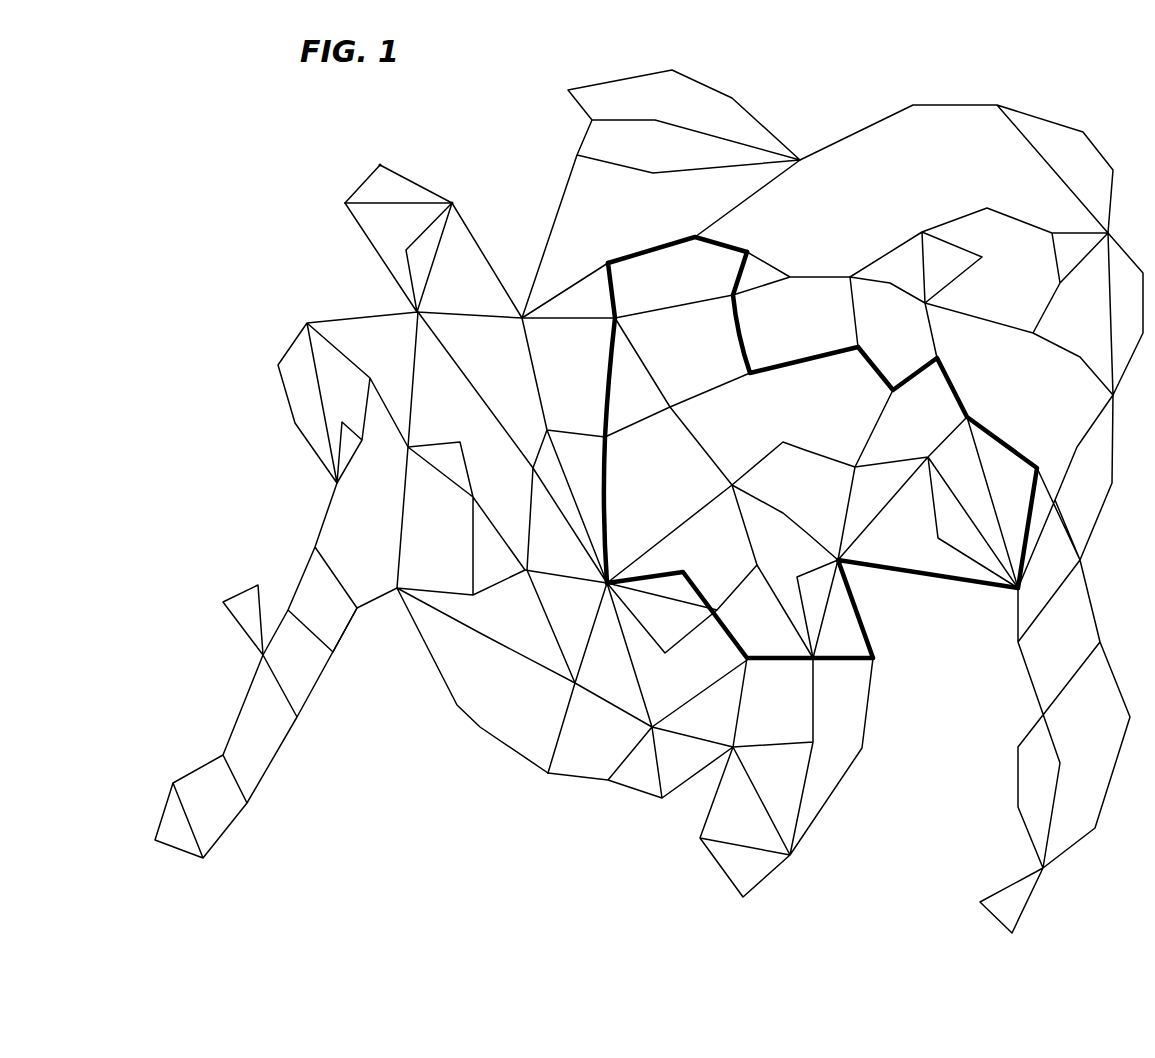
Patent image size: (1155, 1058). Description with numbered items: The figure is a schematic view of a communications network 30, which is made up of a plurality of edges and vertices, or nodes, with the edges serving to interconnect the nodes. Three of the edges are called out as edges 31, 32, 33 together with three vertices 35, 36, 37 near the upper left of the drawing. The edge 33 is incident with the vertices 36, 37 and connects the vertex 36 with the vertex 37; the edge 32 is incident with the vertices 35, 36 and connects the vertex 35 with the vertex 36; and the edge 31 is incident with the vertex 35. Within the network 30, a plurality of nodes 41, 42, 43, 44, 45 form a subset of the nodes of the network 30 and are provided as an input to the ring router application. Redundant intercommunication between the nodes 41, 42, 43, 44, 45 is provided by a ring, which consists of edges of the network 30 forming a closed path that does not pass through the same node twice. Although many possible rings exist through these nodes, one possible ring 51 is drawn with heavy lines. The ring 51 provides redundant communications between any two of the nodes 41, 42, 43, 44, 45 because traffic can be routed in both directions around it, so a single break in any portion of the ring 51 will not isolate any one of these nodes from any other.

The communications network 30 is at (192, 488).
The edge 31 is at (500, 278).
The edge 32 is at (412, 175).
The edge 33 is at (360, 185).
The vertex 35 is at (453, 203).
The vertex 36 is at (380, 165).
The vertex 37 is at (345, 203).
The node 41 is at (610, 438).
The node 42 is at (747, 252).
The node 43 is at (853, 350).
The node 44 is at (1008, 440).
The node 45 is at (873, 660).
The ring 51 is at (858, 613).